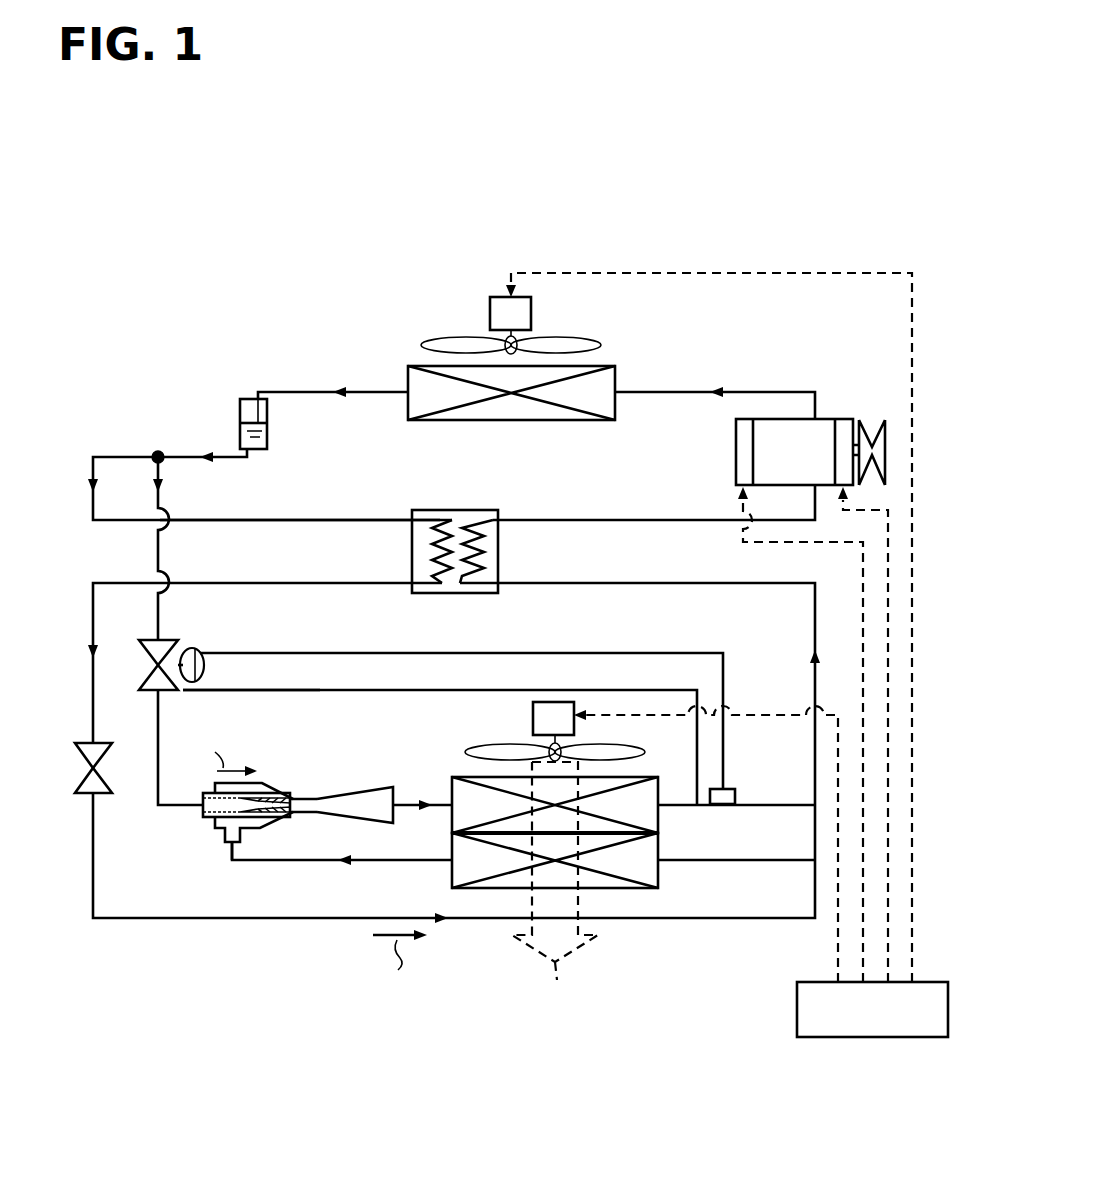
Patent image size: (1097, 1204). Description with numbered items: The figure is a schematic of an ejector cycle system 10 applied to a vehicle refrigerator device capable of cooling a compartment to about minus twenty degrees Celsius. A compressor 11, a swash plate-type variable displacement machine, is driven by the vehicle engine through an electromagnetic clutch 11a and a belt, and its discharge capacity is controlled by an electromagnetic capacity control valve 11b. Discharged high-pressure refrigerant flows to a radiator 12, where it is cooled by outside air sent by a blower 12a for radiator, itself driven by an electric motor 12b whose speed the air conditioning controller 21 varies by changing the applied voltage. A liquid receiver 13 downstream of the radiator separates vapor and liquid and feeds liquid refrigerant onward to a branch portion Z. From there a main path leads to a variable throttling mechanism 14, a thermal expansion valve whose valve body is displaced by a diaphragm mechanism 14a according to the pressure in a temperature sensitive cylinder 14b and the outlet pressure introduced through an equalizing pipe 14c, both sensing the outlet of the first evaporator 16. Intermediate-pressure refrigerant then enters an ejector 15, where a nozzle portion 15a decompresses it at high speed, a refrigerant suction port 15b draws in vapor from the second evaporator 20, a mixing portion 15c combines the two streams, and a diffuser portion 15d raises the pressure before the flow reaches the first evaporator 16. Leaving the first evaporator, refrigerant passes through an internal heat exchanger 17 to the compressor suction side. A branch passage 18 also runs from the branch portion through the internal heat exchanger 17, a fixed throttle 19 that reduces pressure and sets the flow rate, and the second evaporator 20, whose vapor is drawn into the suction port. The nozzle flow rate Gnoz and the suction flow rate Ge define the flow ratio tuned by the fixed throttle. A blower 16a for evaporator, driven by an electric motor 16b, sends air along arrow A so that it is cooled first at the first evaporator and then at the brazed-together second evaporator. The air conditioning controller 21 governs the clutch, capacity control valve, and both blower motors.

The ejector cycle system 10 is at (697, 375).
The compressor 11 is at (823, 417).
The electromagnetic clutch 11a is at (863, 404).
The electromagnetic capacity control valve 11b is at (733, 460).
The radiator 12 is at (408, 387).
The blower for radiator 12a is at (430, 346).
The electric motor for driving 12b is at (490, 313).
The liquid receiver 13 is at (240, 410).
The variable throttling mechanism 14 is at (150, 650).
The diaphragm mechanism 14a is at (195, 655).
The temperature sensitive cylinder 14b is at (733, 789).
The equalizing pipe 14c is at (255, 690).
The ejector 15 is at (342, 778).
The nozzle portion 15a is at (244, 771).
The refrigerant suction port 15b is at (227, 838).
The mixing portion 15c is at (302, 810).
The diffuser portion 15d is at (355, 813).
The first evaporator 16 is at (660, 815).
The blower for evaporator 16a is at (467, 752).
The electric motor for driving 16b is at (533, 718).
The internal heat exchanger 17 is at (412, 552).
The branch passage 18 is at (205, 522).
The fixed throttle 19 is at (93, 745).
The second evaporator 20 is at (660, 870).
The air conditioning controller 21 is at (797, 1010).
The branch portion Z is at (158, 455).
The nozzle refrigerant flow rate Gnoz is at (273, 790).
The suction refrigerant flow rate Ge is at (400, 963).
The air flow A is at (555, 888).